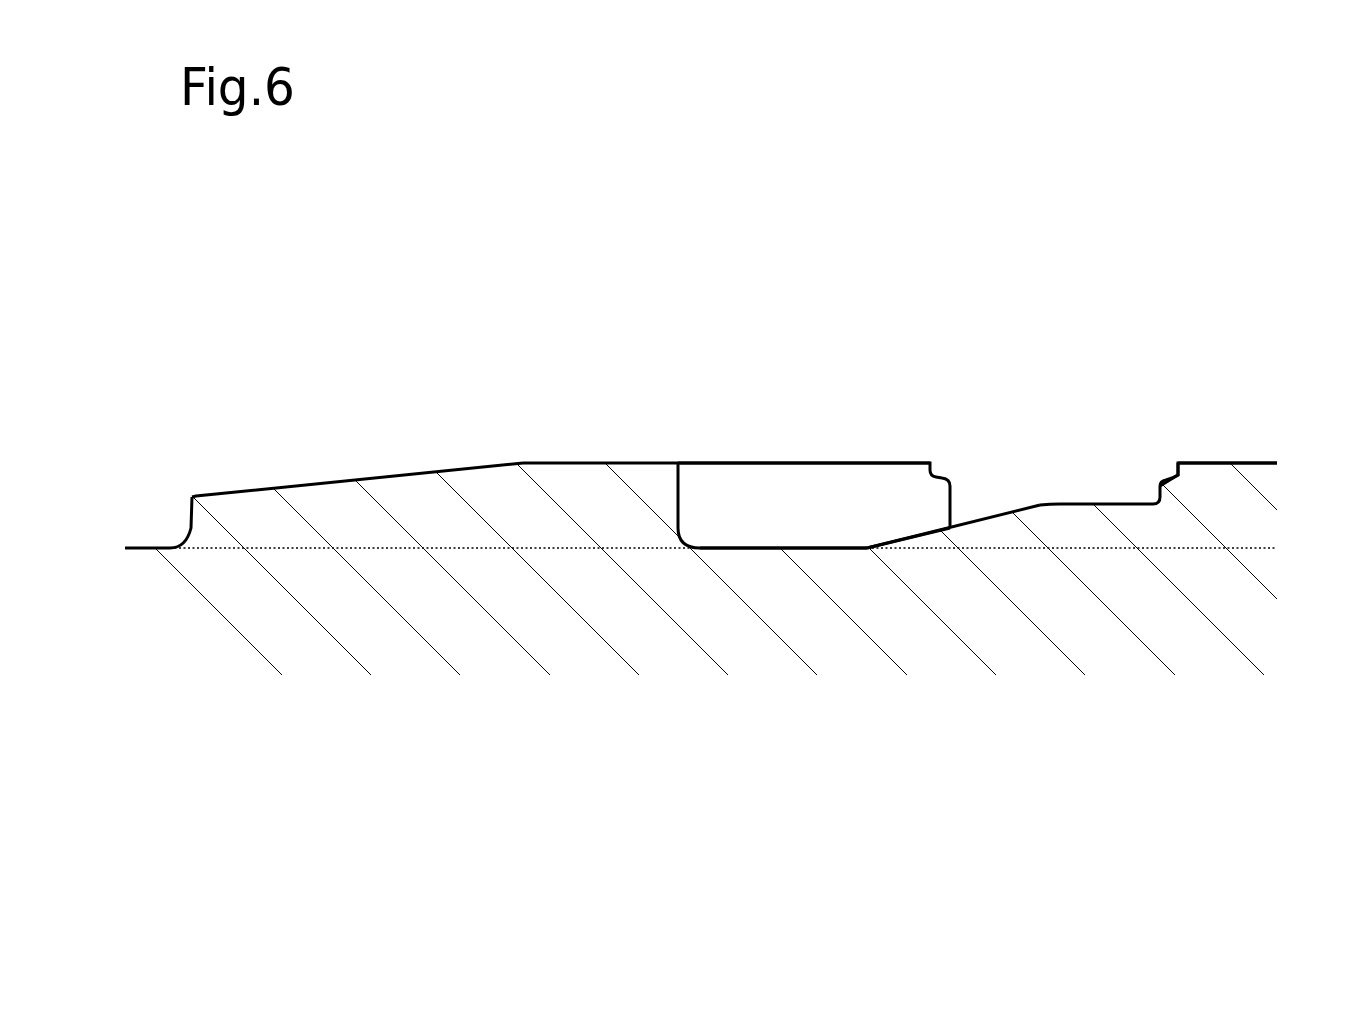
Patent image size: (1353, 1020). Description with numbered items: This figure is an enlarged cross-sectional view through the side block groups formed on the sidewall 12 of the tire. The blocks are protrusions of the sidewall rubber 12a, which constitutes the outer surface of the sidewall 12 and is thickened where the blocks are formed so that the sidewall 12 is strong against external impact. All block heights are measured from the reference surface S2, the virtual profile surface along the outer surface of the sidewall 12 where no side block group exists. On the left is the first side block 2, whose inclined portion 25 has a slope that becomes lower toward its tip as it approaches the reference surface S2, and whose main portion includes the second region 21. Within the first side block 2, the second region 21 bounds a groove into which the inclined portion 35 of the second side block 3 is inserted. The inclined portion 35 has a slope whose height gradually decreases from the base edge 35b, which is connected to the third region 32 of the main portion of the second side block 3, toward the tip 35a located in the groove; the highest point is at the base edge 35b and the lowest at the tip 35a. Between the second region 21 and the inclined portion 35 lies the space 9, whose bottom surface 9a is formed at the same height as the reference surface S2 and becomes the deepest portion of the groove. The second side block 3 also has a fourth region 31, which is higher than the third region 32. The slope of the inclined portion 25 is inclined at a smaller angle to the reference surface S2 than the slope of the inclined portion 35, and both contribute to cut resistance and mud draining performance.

The sidewall 12 is at (684, 345).
The sidewall rubber 12a is at (221, 451).
The reference surface S2 is at (264, 546).
The inclined portion 25 is at (383, 477).
The first side block 2 is at (737, 458).
The second region 21 is at (838, 462).
The space 9 is at (800, 482).
The bottom surface 9a is at (808, 546).
The inclined portion 35 is at (983, 516).
The tip 35a is at (901, 538).
The base edge 35b is at (1022, 510).
The third region 32 is at (1103, 504).
The second side block 3 is at (1177, 452).
The fourth region 31 is at (1225, 462).